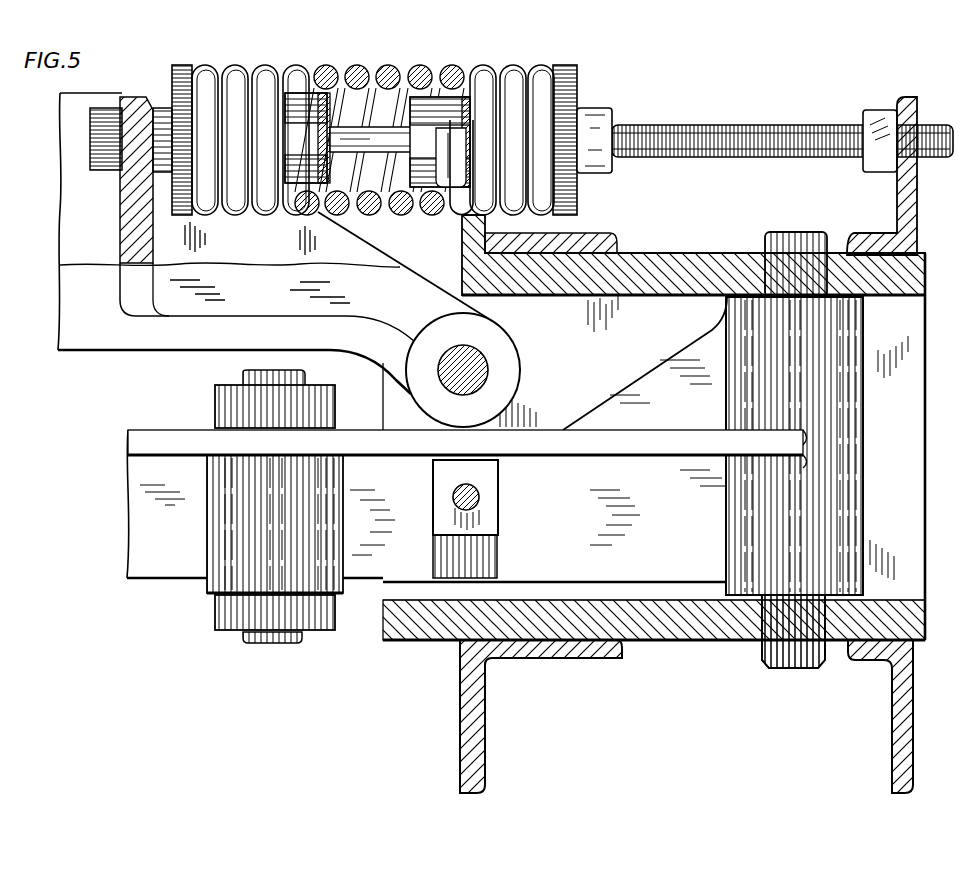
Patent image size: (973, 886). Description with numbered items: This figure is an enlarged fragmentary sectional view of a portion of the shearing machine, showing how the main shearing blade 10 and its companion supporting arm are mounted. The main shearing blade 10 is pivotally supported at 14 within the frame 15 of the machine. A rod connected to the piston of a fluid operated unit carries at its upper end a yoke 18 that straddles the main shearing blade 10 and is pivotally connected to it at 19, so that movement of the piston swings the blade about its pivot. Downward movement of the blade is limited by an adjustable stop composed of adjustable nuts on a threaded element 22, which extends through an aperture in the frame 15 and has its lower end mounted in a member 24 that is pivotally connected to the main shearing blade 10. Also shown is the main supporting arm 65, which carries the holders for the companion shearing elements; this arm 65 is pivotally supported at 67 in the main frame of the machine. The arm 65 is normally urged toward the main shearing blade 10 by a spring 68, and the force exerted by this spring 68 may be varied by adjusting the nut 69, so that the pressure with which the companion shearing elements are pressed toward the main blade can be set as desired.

The main shearing blade 10 is at (132, 466).
The pivotal support 14 is at (790, 242).
The frame 15 is at (664, 630).
The yoke 18 is at (218, 612).
The pivotal connection 19 is at (266, 640).
The threaded element 22 is at (455, 500).
The member 24 is at (488, 484).
The main supporting arm 65 is at (60, 298).
The pivotal support 67 is at (478, 360).
The spring 68 is at (237, 73).
The nut 69 is at (594, 116).